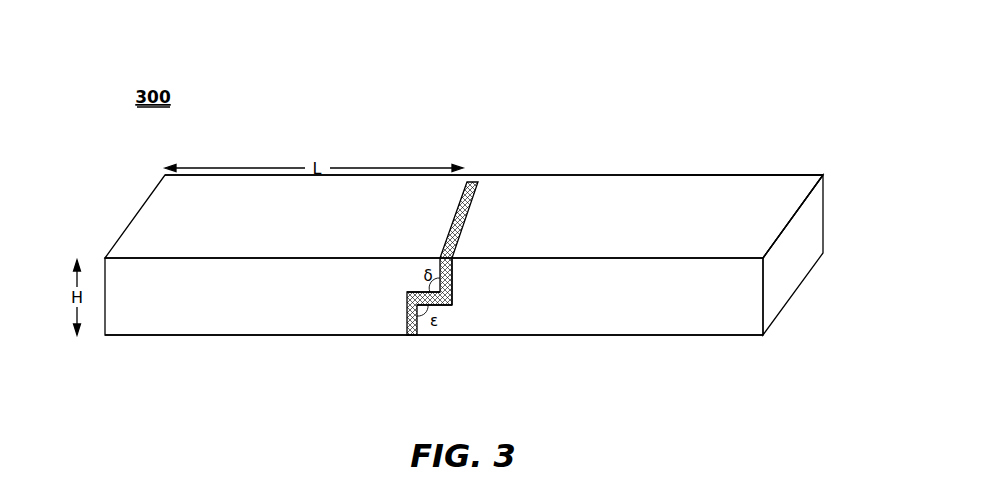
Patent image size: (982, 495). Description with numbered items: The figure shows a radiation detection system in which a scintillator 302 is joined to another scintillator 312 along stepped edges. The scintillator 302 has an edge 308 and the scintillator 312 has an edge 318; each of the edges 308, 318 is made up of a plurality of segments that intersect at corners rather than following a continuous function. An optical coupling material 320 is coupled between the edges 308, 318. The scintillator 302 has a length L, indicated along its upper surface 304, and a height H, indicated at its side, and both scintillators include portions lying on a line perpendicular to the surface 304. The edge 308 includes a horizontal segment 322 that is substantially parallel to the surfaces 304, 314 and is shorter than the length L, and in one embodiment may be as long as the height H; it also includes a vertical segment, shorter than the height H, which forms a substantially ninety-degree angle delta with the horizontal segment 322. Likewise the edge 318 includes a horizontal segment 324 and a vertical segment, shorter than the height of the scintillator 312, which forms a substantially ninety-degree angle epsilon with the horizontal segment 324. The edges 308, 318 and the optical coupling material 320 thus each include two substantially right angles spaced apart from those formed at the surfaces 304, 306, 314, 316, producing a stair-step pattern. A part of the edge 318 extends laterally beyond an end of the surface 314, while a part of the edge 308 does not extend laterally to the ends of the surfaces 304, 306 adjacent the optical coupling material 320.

The scintillator 302 is at (87, 229).
The surface 304 is at (218, 226).
The surface 306 is at (251, 347).
The edge 308 is at (395, 308).
The scintillator 312 is at (710, 160).
The surface 314 is at (592, 205).
The surface 316 is at (621, 347).
The edge 318 is at (464, 280).
The optical coupling material 320 is at (405, 347).
The horizontal segment 322 is at (402, 284).
The horizontal segment 324 is at (462, 312).